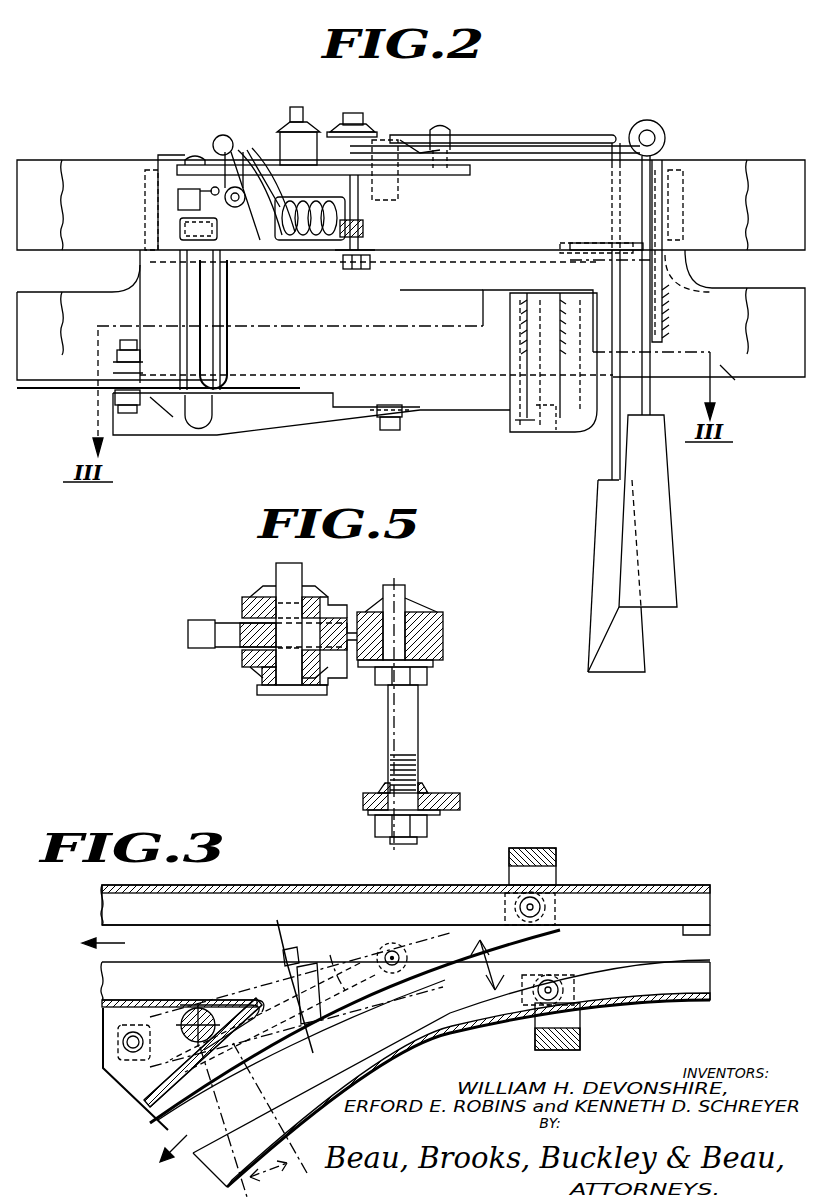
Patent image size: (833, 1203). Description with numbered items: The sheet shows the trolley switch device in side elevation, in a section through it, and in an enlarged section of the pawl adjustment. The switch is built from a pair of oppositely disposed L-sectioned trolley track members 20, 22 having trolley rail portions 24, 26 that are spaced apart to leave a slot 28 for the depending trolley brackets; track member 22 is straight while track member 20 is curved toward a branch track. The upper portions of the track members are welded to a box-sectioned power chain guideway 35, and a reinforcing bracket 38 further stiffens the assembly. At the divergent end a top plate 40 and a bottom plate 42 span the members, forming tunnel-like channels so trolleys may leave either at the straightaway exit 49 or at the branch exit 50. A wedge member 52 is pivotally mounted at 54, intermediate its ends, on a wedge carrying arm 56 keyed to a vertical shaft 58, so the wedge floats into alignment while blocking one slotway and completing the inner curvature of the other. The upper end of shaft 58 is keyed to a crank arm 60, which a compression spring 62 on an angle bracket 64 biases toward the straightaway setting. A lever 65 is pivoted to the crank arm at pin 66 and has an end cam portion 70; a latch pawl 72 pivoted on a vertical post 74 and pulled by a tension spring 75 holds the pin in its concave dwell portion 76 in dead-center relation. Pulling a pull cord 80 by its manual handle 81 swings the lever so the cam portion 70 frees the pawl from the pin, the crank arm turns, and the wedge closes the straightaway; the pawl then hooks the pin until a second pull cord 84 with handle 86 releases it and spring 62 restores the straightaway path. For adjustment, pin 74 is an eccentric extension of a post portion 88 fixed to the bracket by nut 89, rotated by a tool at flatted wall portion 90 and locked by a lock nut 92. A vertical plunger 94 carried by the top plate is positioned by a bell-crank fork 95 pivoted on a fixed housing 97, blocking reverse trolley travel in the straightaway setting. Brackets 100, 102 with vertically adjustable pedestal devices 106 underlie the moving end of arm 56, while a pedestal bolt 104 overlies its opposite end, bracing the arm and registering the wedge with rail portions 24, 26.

In FIG. 2, the trolley track member 20 is at (723, 367).
In FIG. 3, the trolley track member 20 is at (689, 1001).
In FIG. 3, the trolley track member 22 is at (673, 885).
In FIG. 2, the trolley rail portion 24 is at (798, 380).
In FIG. 3, the trolley rail portion 24 is at (712, 973).
In FIG. 3, the trolley rail portion 26 is at (712, 906).
In FIG. 3, the slot 28 is at (690, 929).
In FIG. 2, the power chain guideway 35 is at (766, 175).
In FIG. 2, the reinforcing bracket 38 is at (662, 319).
In FIG. 2, the top plate 40 is at (173, 155).
In FIG. 2, the bottom plate 42 is at (80, 388).
In FIG. 3, the bottom plate 42 is at (140, 1088).
In FIG. 3, the straightaway exit position 49 is at (83, 944).
In FIG. 3, the branch exit position 50 is at (159, 1161).
In FIG. 2, the wedge member 52 is at (592, 417).
In FIG. 3, the wedge member 52 is at (572, 948).
In FIG. 2, the pivotal mounting 54 is at (390, 431).
In FIG. 3, the pivotal mounting 54 is at (391, 948).
In FIG. 2, the wedge carrying arm 56 is at (323, 410).
In FIG. 3, the wedge carrying arm 56 is at (331, 953).
In FIG. 2, the vertical shaft 58 is at (196, 155).
In FIG. 3, the vertical shaft 58 is at (199, 1008).
In FIG. 2, the crank arm 60 is at (261, 165).
In FIG. 5, the crank arm 60 is at (265, 688).
In FIG. 2, the compression spring 62 is at (345, 219).
In FIG. 2, the angle bracket 64 is at (521, 207).
In FIG. 5, the angle bracket 64 is at (455, 800).
In FIG. 2, the lever 65 is at (279, 125).
In FIG. 5, the lever 65 is at (248, 608).
In FIG. 2, the pivot pin 66 is at (303, 112).
In FIG. 5, the pivot pin 66 is at (302, 574).
In FIG. 2, the cam portion 70 is at (325, 132).
In FIG. 5, the cam portion 70 is at (341, 645).
In FIG. 2, the latch pawl 72 is at (421, 153).
In FIG. 5, the latch pawl 72 is at (435, 633).
In FIG. 2, the vertical post 74 is at (364, 126).
In FIG. 5, the vertical post 74 is at (400, 592).
In FIG. 2, the tension spring 75 is at (410, 134).
In FIG. 5, the concave dwell portion 76 is at (230, 637).
In FIG. 2, the pull cord 80 is at (650, 398).
In FIG. 2, the manual handle 81 is at (668, 550).
In FIG. 2, the second pull cord 84 is at (535, 135).
In FIG. 2, the manual handle 86 is at (600, 633).
In FIG. 2, the post portion 88 is at (362, 210).
In FIG. 5, the post portion 88 is at (410, 724).
In FIG. 2, the nut 89 is at (355, 269).
In FIG. 5, the nut 89 is at (427, 825).
In FIG. 5, the flatted wall portion 90 is at (427, 678).
In FIG. 5, the lock nut 92 is at (385, 790).
In FIG. 2, the vertical plunger 94 is at (180, 228).
In FIG. 2, the fork 95 is at (178, 206).
In FIG. 2, the fixed housing 97 is at (228, 243).
In FIG. 3, the bracket 100 is at (543, 848).
In FIG. 2, the bracket 102 is at (540, 428).
In FIG. 3, the bracket 102 is at (583, 1037).
In FIG. 2, the pedestal bolt 104 is at (123, 348).
In FIG. 3, the pedestal bolt 104 is at (125, 1043).
In FIG. 2, the pedestal devices 106 is at (517, 418).
In FIG. 3, the pedestal devices 106 is at (545, 902).